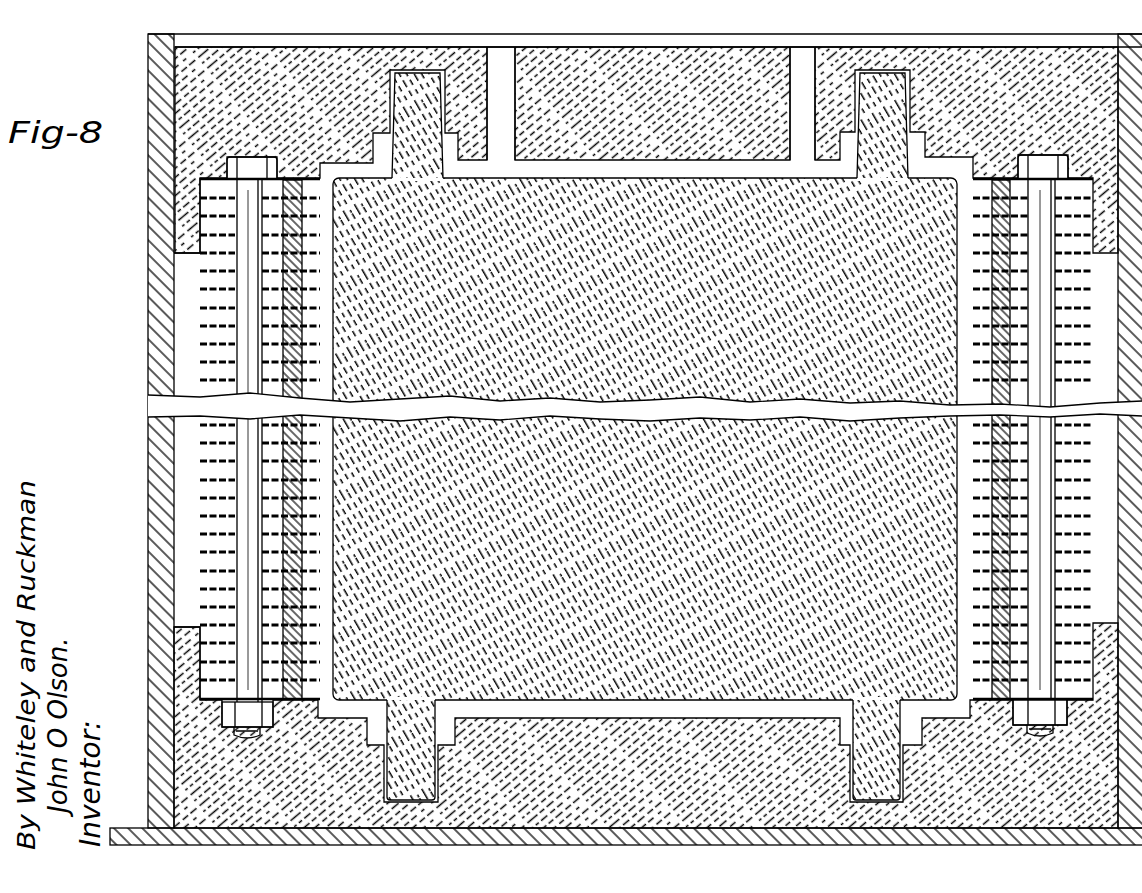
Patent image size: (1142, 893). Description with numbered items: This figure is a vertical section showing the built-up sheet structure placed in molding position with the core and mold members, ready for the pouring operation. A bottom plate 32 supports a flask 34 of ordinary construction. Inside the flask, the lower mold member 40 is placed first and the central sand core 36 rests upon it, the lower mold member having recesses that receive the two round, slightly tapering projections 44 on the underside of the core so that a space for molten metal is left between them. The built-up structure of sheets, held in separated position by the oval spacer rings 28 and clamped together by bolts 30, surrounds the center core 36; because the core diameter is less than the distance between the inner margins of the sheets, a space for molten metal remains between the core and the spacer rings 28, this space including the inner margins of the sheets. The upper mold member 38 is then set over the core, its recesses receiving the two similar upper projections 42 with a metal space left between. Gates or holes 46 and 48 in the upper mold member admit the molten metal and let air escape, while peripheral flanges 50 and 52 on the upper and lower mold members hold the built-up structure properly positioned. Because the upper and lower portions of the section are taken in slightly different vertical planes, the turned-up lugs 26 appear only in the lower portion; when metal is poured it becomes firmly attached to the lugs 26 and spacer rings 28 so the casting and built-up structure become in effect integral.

The lugs 26 is at (990, 466).
The spacer rings 28 is at (296, 272).
The bolts 30 is at (243, 264).
The bottom plate 32 is at (119, 826).
The flask 34 is at (160, 222).
The central sand core 36 is at (419, 373).
The upper mold member 38 is at (197, 100).
The lower mold member 40 is at (197, 747).
The projections 42 is at (436, 150).
The projections 44 is at (428, 721).
The gate 46 is at (512, 152).
The gate 48 is at (796, 152).
The peripheral flange 50 is at (182, 238).
The peripheral flange 52 is at (190, 644).